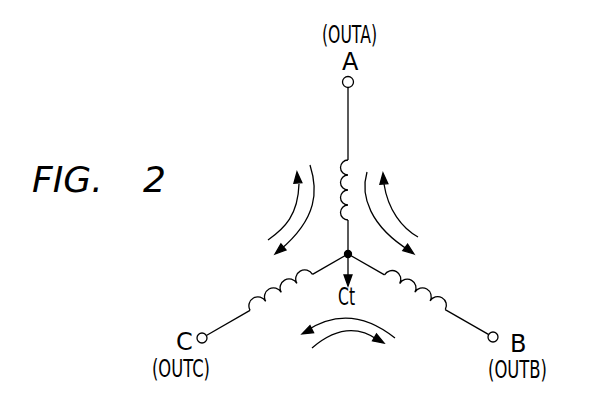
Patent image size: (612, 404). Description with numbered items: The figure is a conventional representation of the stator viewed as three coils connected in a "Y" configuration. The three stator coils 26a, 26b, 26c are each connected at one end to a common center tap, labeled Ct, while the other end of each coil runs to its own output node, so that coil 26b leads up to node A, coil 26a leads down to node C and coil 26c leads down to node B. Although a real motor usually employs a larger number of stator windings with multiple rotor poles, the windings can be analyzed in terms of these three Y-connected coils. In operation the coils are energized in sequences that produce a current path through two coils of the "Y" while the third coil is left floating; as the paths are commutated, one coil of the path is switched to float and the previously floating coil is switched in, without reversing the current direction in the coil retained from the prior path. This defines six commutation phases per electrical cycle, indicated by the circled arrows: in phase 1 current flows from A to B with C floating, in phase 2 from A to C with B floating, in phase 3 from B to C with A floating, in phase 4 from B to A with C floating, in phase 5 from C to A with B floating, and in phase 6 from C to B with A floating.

The stator coil 26a is at (262, 283).
The stator coil 26b is at (333, 162).
The stator coil 26c is at (437, 283).
The phase 1 is at (368, 200).
The phase 2 is at (313, 190).
The phase 3 is at (358, 318).
The phase 4 is at (396, 222).
The phase 5 is at (297, 212).
The phase 6 is at (327, 338).